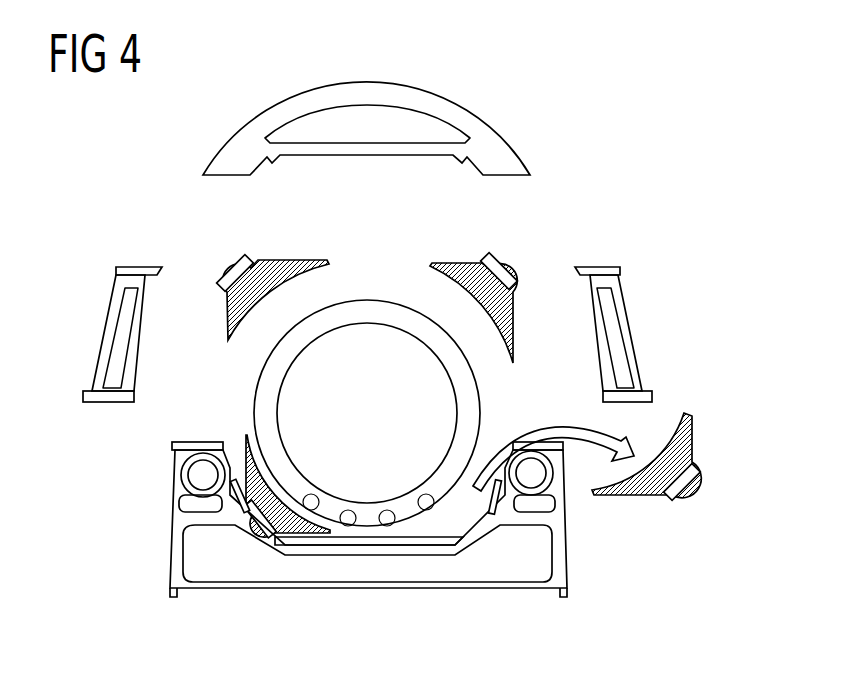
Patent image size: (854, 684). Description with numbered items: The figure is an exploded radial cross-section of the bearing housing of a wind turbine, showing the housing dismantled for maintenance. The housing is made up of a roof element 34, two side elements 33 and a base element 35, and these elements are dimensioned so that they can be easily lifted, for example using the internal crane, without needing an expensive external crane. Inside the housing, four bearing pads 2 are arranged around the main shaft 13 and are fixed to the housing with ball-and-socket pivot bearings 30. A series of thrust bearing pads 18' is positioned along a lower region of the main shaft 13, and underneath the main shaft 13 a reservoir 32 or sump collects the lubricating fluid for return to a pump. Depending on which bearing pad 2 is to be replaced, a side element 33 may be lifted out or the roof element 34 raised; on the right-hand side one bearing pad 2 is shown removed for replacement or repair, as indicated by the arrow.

The bearing pad 2 is at (283, 262).
The main shaft 13 is at (450, 480).
The thrust bearing pads 18' is at (368, 567).
The ball-and-socket pivot bearing 30 is at (232, 270).
The reservoir 32 is at (370, 540).
The side element 33 is at (122, 278).
The roof element 34 is at (378, 103).
The base element 35 is at (567, 578).